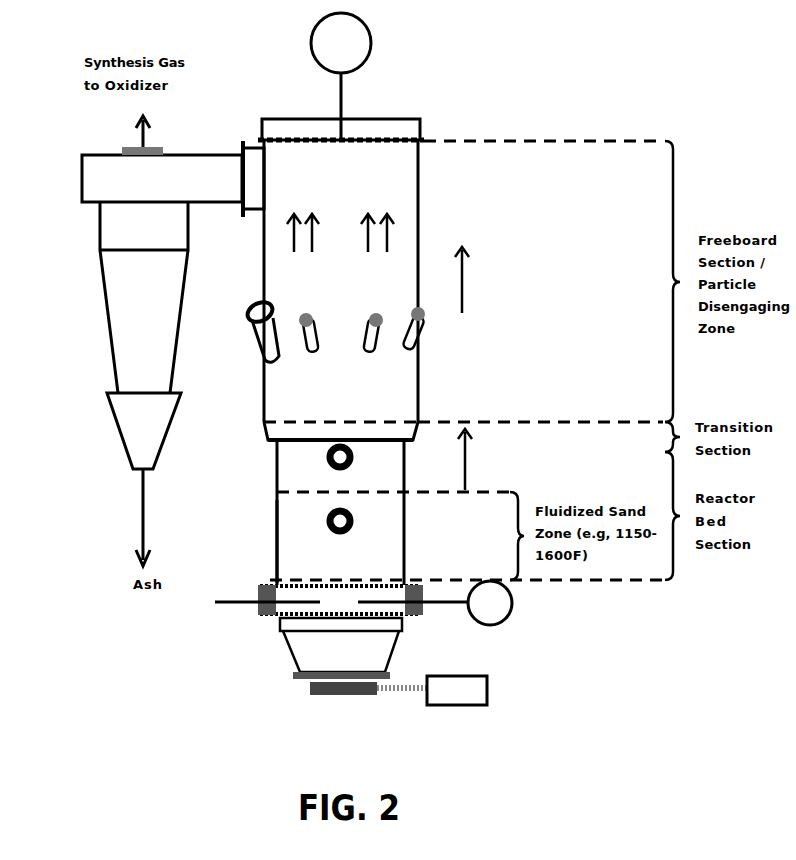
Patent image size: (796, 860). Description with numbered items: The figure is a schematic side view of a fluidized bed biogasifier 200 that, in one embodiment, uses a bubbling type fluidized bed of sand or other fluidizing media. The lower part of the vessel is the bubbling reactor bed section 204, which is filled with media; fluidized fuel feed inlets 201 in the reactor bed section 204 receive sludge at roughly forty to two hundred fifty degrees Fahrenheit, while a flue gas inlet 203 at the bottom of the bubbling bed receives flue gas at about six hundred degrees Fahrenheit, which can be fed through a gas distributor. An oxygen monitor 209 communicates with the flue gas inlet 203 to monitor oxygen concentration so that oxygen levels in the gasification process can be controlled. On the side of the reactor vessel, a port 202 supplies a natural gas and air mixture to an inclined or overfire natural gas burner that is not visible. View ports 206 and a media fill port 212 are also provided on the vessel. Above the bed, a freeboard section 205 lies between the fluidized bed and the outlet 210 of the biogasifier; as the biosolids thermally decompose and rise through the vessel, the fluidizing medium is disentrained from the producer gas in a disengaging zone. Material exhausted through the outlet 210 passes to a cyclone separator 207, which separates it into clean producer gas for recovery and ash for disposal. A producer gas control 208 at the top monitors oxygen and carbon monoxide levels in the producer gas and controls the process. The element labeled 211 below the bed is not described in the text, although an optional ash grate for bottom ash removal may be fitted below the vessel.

The fluidized bed biogasifier 200 is at (215, 55).
The fluidized fuel feed inlets 201 is at (308, 498).
The port 202 is at (258, 343).
The flue gas inlet 203 is at (418, 592).
The bubbling reactor bed section 204 is at (297, 537).
The freeboard section 205 is at (403, 172).
The view ports 206 is at (365, 331).
The cyclone separator 207 is at (105, 287).
The producer gas control 208 is at (311, 44).
The oxygen monitor 209 is at (471, 618).
The outlet 210 is at (215, 203).
The plenum 211 is at (277, 622).
The media fill port 212 is at (425, 331).